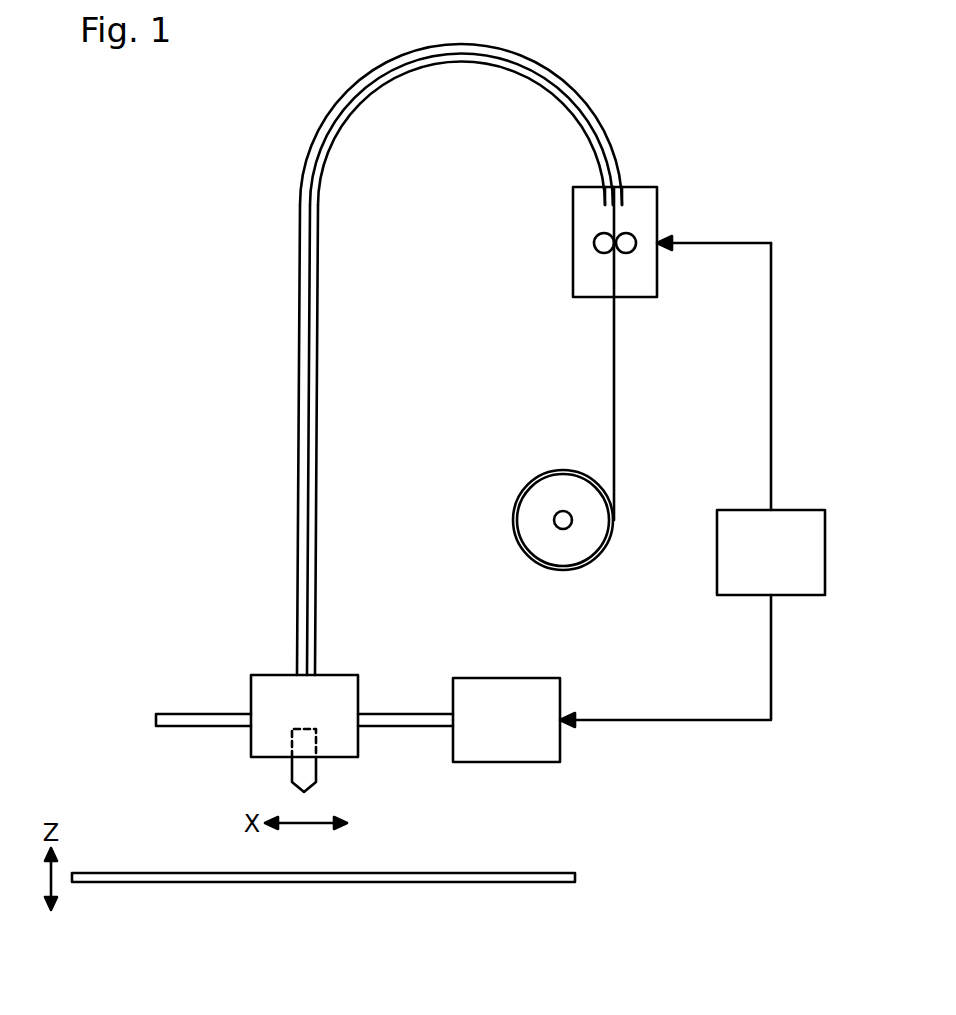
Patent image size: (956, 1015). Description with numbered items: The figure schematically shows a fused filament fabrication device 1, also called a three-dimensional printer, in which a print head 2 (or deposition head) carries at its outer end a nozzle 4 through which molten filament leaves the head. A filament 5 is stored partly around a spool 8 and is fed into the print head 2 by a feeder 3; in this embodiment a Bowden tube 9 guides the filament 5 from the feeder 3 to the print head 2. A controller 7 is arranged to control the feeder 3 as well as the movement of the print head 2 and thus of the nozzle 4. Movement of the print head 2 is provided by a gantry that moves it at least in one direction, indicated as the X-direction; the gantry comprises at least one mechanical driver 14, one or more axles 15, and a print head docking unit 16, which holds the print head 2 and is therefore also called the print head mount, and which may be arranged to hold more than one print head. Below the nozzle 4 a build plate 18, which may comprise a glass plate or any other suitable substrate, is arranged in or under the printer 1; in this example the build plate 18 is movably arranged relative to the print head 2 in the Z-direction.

The fused filament fabrication device 1 is at (218, 305).
The print head 2 is at (315, 773).
The feeder 3 is at (580, 257).
The nozzle 4 is at (300, 790).
The filament 5 is at (307, 372).
The controller 7 is at (786, 515).
The spool 8 is at (528, 520).
The Bowden tube 9 is at (321, 117).
The mechanical driver 14 is at (553, 742).
The axle 15 is at (392, 716).
The print head docking unit 16 is at (251, 686).
The build plate 18 is at (523, 878).